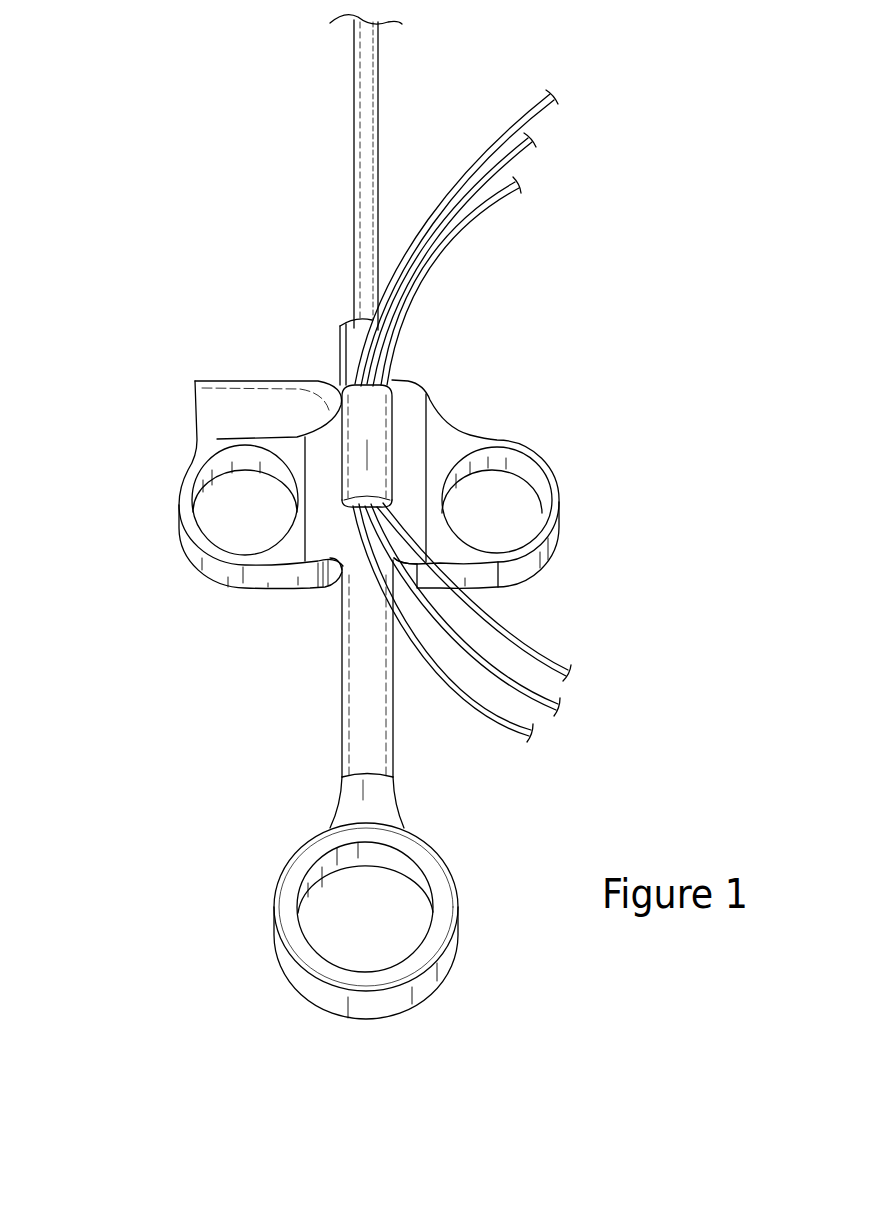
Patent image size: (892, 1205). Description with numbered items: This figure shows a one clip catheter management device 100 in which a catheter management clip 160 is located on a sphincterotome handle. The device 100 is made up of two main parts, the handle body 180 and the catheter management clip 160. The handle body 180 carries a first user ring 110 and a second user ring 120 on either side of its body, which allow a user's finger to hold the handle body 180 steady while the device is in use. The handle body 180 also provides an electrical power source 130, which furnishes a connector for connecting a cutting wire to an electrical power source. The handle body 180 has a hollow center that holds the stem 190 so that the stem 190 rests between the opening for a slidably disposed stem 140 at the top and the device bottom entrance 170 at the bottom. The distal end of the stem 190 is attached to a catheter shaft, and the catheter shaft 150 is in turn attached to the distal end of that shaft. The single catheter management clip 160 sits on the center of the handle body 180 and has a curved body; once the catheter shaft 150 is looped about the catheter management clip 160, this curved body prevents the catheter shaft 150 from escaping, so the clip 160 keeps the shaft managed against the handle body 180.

The one clip catheter management device 100 is at (215, 312).
The first user ring 110 is at (230, 465).
The second user ring 120 is at (495, 467).
The electrical power source 130 is at (300, 383).
The opening for a slidably disposed stem 140 is at (342, 347).
The catheter shaft 150 is at (365, 145).
The catheter management clip 160 is at (395, 371).
The device bottom entrance 170 is at (336, 590).
The handle body 180 is at (457, 418).
The stem 190 is at (342, 750).